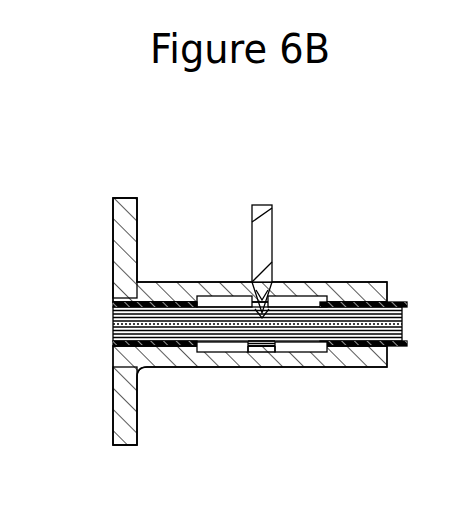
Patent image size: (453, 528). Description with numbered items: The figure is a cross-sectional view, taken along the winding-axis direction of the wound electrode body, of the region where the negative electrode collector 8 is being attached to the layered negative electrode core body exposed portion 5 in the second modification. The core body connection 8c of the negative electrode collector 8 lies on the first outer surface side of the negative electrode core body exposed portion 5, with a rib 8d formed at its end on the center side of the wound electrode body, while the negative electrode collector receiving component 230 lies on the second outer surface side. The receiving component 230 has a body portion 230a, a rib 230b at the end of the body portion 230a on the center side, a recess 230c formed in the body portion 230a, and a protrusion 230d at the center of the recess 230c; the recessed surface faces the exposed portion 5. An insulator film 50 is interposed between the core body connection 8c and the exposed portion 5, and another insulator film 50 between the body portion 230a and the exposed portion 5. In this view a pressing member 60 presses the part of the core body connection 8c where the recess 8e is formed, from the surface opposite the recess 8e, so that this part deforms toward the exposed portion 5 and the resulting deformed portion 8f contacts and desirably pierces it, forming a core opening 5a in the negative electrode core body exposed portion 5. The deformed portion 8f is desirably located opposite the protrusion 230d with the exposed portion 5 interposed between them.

The negative electrode collector 8 is at (222, 218).
The core body connection 8c is at (163, 292).
The rib 8d is at (122, 250).
The recess 8e is at (228, 296).
The deformed portion 8f is at (283, 295).
The pressing member 60 is at (265, 233).
The negative electrode core body exposed portion 5 is at (281, 278).
The core opening 5a is at (266, 312).
The insulator film 50 is at (113, 303).
The negative electrode collector receiving component 230 is at (207, 416).
The body portion 230a is at (182, 353).
The rib 230b is at (125, 420).
The recess 230c is at (298, 352).
The protrusion 230d is at (262, 352).